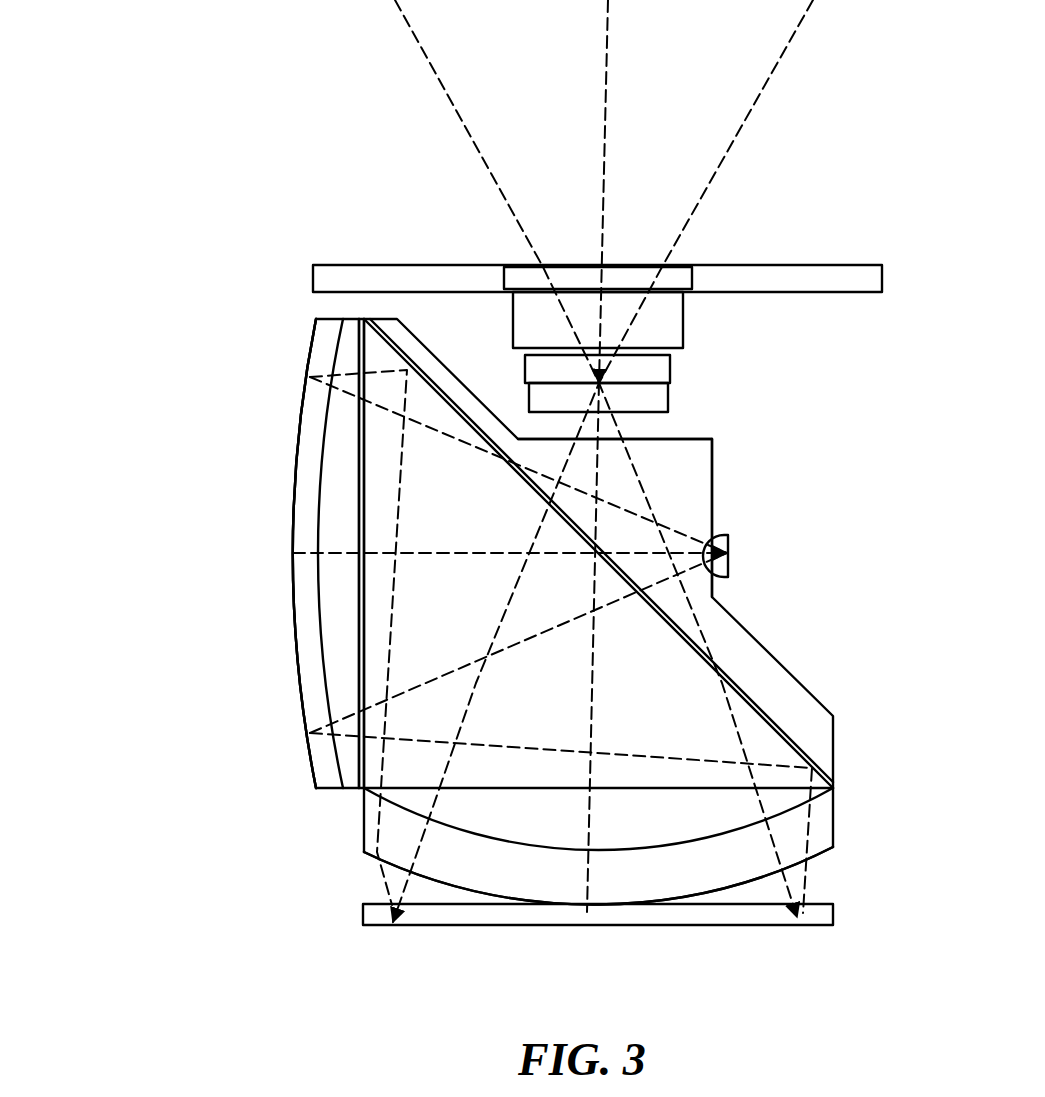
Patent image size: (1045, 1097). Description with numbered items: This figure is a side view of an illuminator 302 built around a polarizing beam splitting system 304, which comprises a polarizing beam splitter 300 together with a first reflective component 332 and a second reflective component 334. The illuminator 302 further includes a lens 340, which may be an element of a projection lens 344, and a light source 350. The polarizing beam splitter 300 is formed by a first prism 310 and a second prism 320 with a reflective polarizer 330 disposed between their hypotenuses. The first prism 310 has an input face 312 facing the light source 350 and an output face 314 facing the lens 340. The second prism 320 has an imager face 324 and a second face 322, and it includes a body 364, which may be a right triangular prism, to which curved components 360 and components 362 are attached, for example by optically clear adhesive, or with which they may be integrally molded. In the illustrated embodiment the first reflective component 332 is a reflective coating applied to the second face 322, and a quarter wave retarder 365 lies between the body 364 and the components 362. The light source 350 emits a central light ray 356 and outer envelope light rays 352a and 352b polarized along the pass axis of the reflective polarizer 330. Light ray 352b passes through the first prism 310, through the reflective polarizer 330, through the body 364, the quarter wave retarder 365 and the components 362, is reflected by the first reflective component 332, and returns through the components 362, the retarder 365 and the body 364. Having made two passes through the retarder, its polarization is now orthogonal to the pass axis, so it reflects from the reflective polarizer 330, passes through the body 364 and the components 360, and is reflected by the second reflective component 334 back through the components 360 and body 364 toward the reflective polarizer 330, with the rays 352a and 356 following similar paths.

The polarizing beam splitter 300 is at (270, 295).
The illuminator 302 is at (127, 132).
The polarizing beam splitting system 304 is at (118, 437).
The first prism 310 is at (678, 465).
The input face 312 is at (712, 494).
The output face 314 is at (675, 438).
The second prism 320 is at (440, 633).
The second face 322 is at (293, 600).
The imager face 324 is at (822, 852).
The reflective polarizer 330 is at (363, 342).
The first reflective component 332 is at (292, 525).
The second reflective component 334 is at (810, 913).
The lens 340 is at (650, 397).
The projection lens 344 is at (635, 395).
The light source 350 is at (728, 568).
The outer envelope light ray 352a is at (442, 80).
The outer envelope light ray 352b is at (763, 90).
The central light ray 356 is at (607, 72).
The components 360 is at (710, 810).
The components 362 is at (335, 472).
The body 364 is at (765, 742).
The quarter wave retarder 365 is at (358, 435).